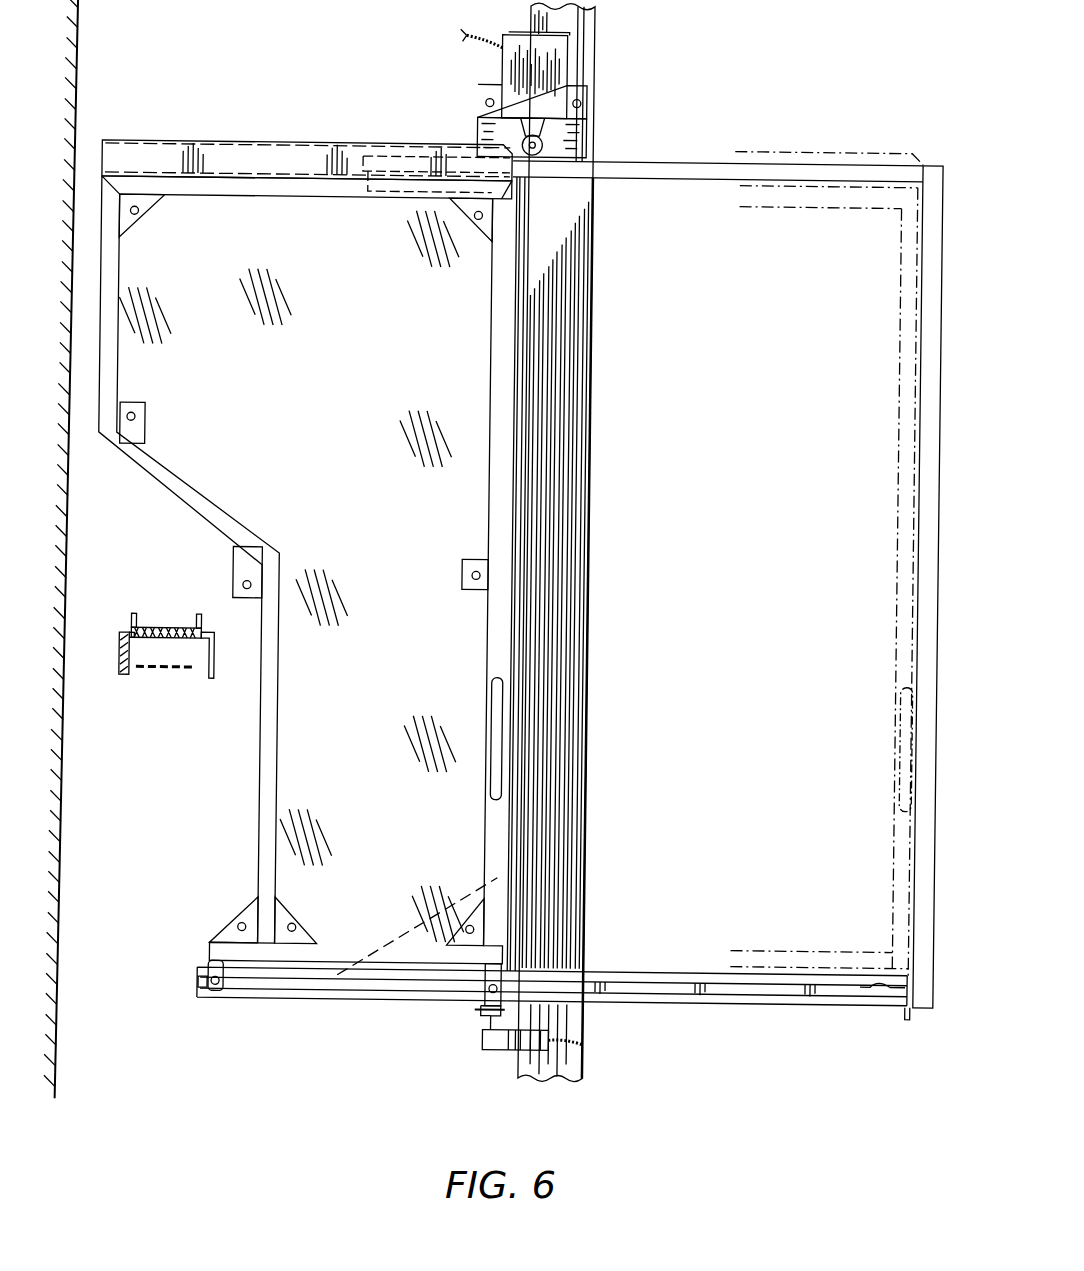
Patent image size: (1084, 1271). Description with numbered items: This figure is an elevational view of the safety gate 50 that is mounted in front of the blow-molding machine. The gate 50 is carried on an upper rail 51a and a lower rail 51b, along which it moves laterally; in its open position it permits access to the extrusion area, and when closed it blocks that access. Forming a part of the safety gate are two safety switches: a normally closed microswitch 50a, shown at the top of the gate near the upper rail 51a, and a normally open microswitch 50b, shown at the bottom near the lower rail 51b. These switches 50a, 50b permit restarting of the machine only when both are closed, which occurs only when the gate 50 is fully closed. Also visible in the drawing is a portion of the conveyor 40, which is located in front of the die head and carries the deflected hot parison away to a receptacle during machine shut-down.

The conveyor 40 is at (171, 617).
The safety gate 50 is at (250, 814).
The normally closed microswitch 50a is at (490, 78).
The normally open microswitch 50b is at (485, 1014).
The rail 51a is at (637, 169).
The rail 51b is at (637, 989).